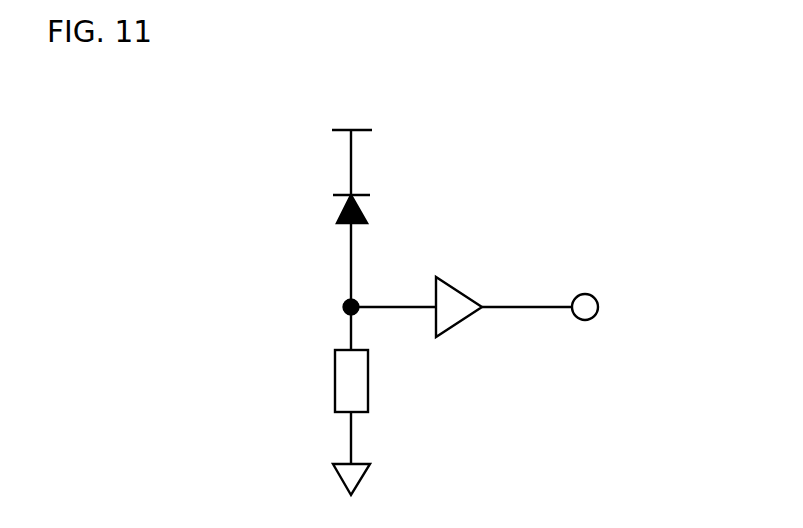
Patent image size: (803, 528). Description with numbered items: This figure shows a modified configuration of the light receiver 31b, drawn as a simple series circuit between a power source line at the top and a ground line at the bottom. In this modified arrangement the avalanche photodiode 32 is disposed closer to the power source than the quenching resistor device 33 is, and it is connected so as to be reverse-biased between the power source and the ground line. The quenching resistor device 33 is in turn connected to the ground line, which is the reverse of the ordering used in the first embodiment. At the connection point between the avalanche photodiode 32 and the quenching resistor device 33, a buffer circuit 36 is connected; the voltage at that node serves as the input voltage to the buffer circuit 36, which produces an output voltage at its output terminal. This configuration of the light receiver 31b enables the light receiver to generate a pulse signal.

The light receiver 31b is at (181, 129).
The avalanche photodiode 32 is at (340, 218).
The quenching resistor device 33 is at (334, 375).
The buffer circuit 36 is at (458, 292).